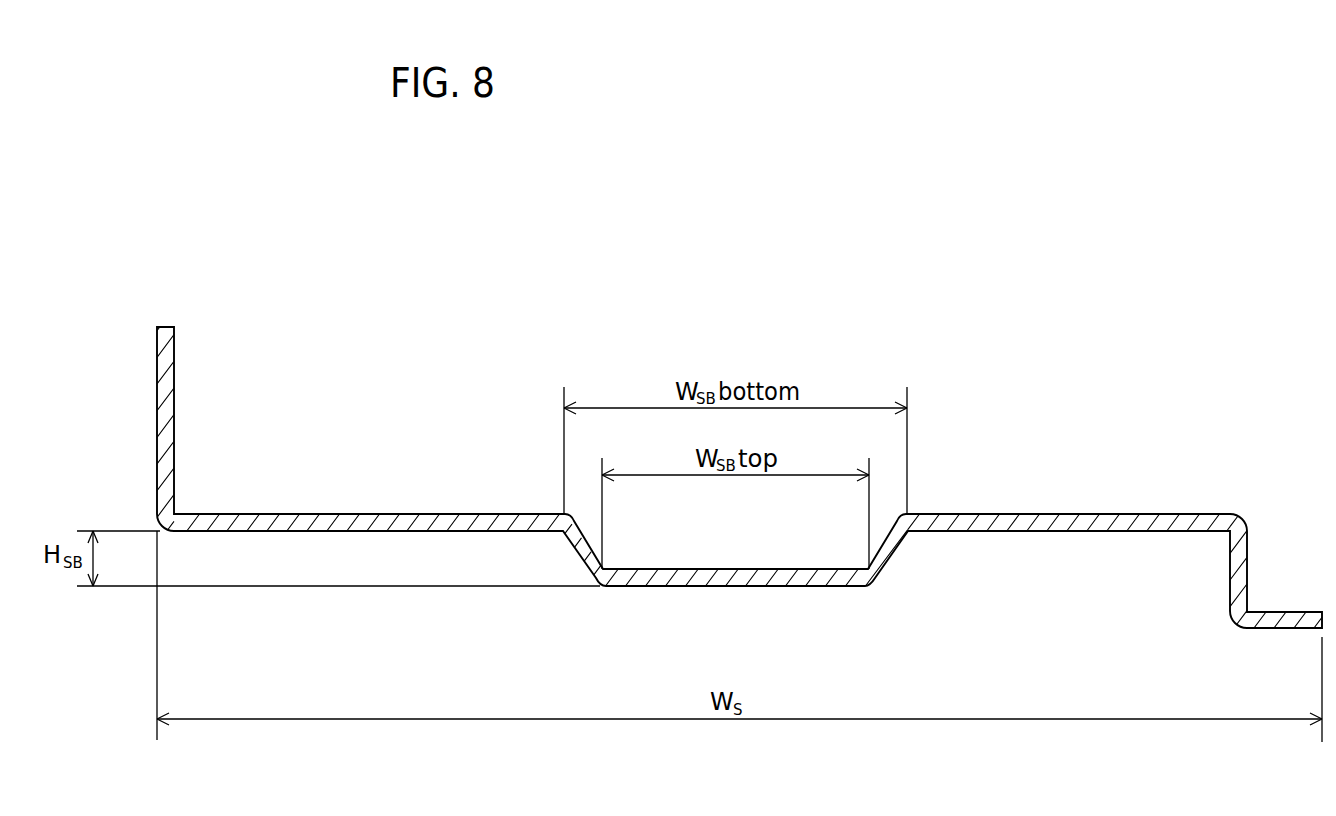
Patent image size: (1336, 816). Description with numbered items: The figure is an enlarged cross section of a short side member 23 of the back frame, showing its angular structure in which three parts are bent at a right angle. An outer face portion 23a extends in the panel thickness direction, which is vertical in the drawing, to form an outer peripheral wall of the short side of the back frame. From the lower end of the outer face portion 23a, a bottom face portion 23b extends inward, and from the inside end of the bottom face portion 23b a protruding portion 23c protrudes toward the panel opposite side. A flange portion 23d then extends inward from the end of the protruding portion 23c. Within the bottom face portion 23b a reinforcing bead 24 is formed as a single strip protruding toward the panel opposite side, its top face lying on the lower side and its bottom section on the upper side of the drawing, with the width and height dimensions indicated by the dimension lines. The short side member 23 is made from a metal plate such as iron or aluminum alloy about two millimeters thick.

The short side member 23 is at (225, 201).
The outer face portion 23a is at (175, 376).
The bottom face portion 23b is at (950, 514).
The protruding portion 23c is at (1230, 560).
The flange portion 23d is at (1290, 612).
The reinforcing bead 24 is at (592, 575).